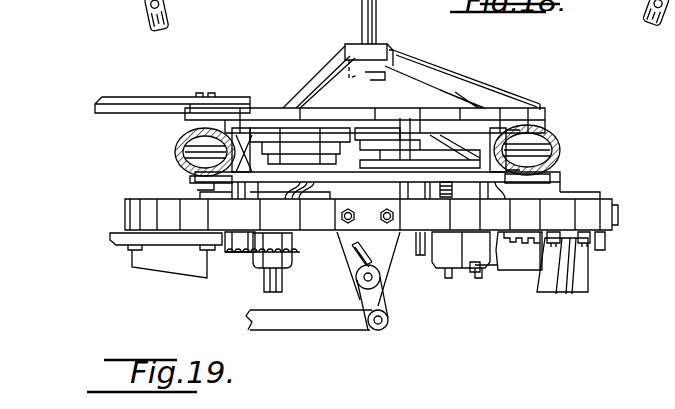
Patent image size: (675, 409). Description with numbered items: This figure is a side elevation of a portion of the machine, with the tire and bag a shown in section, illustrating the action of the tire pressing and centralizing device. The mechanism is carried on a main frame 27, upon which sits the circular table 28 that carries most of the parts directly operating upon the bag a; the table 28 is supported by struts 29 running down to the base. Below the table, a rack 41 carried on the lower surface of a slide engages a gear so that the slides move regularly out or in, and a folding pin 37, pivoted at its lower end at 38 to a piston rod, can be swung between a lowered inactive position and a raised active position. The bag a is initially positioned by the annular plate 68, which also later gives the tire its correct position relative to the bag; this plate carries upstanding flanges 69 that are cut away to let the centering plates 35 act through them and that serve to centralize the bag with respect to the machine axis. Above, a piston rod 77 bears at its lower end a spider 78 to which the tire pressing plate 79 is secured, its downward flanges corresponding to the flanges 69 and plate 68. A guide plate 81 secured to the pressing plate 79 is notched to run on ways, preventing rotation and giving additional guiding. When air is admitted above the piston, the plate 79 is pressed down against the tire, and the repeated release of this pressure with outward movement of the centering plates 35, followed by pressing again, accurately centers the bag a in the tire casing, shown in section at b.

The main frame 27 is at (175, 272).
The circular table 28 is at (130, 217).
The struts 29 is at (580, 265).
The centering plates 35 is at (282, 130).
The folding pin 37 is at (266, 275).
The pivot 38 is at (145, 7).
The racks 41 is at (312, 252).
The annular plate 68 is at (530, 179).
The upstanding flanges 69 is at (474, 110).
The piston rod 77 is at (365, 32).
The spider 78 is at (432, 74).
The tire pressing plate 79 is at (546, 110).
The guide plate 81 is at (155, 102).
The bag a is at (556, 136).
The roller b is at (558, 150).